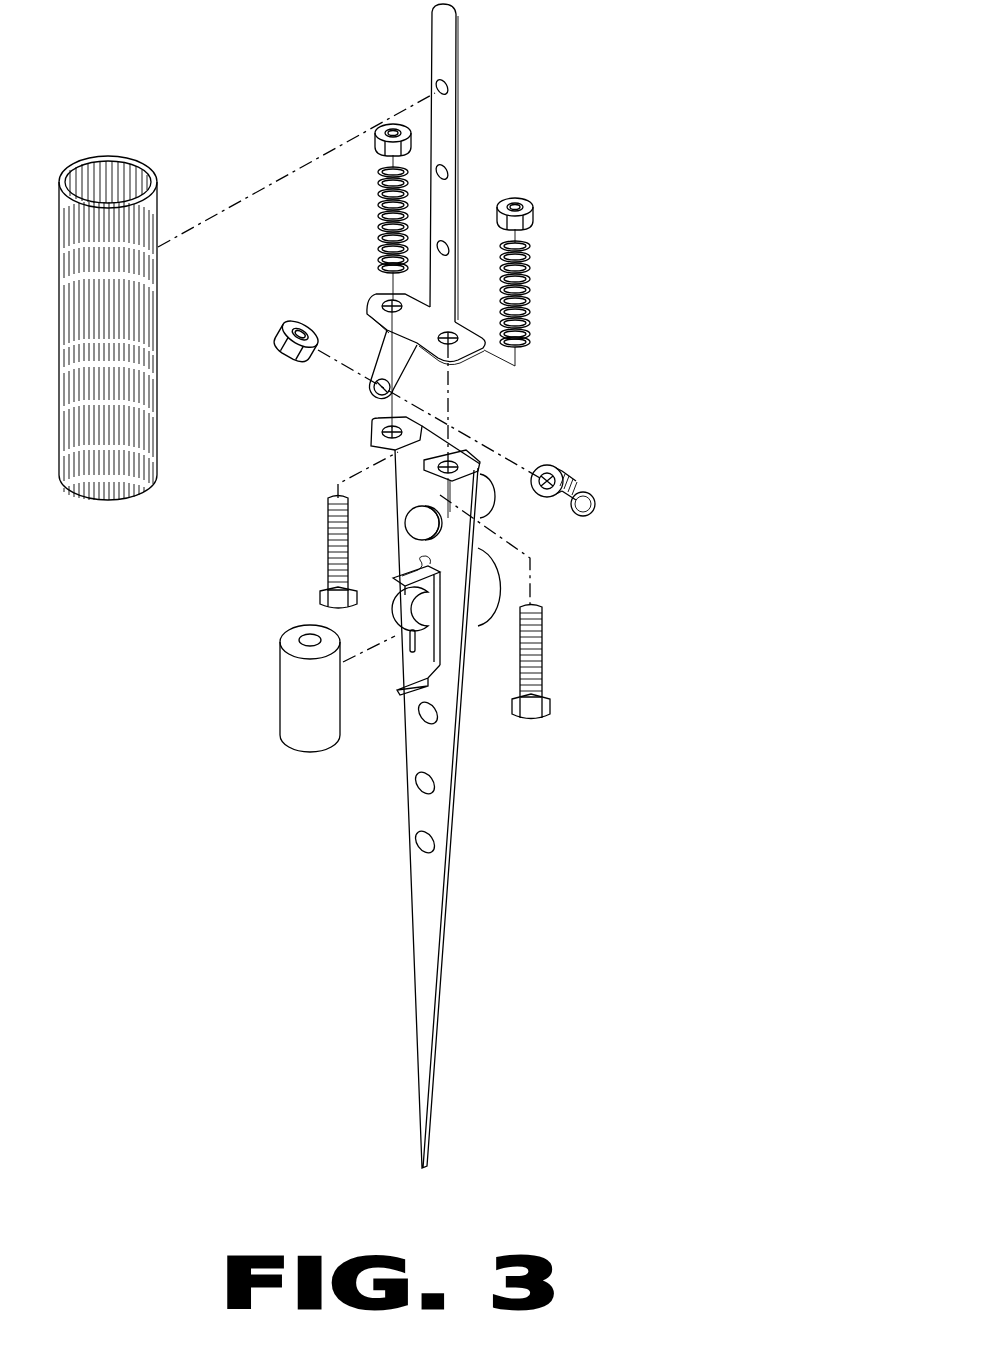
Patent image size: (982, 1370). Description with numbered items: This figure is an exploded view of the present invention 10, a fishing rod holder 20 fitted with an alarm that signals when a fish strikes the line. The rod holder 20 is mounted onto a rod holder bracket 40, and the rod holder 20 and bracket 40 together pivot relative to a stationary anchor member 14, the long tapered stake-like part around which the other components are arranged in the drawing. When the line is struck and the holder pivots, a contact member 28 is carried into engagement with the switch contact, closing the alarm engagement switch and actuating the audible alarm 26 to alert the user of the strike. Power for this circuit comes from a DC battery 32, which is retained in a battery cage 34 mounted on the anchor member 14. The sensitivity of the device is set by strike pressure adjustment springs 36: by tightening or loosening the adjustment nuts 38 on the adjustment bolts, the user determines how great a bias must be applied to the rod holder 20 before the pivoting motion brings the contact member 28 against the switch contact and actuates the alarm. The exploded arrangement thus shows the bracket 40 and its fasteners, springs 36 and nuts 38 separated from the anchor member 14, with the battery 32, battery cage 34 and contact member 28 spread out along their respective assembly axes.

The present invention 10 is at (711, 190).
The stationary anchor member 14 is at (428, 901).
The fishing rod holder 20 is at (117, 158).
The audible alarm 26 is at (490, 573).
The contact member 28 is at (600, 500).
The DC battery 32 is at (297, 687).
The battery cage 34 is at (398, 700).
The strike pressure adjustment springs 36 is at (527, 293).
The adjustment nuts 38 is at (545, 718).
The rod holder bracket 40 is at (455, 113).